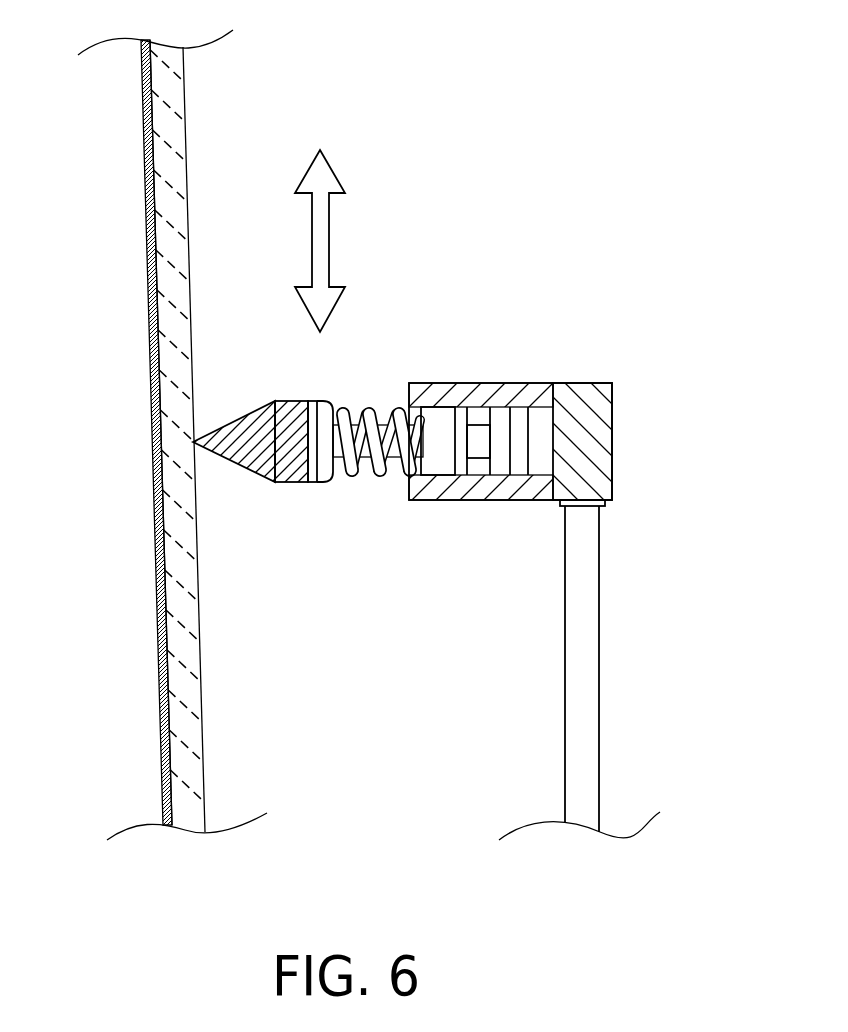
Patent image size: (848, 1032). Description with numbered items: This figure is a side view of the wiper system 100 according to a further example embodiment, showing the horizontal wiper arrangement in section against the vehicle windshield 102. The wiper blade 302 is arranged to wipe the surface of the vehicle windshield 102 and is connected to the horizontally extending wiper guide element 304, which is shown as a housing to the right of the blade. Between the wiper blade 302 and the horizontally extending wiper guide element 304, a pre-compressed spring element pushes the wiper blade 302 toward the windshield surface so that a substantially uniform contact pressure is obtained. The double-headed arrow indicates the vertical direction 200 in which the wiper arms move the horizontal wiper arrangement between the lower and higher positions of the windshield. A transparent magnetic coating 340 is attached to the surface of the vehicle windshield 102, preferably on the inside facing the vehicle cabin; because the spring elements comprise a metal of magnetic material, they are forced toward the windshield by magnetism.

The wiper system 100 is at (455, 484).
The vehicle windshield 102 is at (167, 110).
The vertical direction 200 is at (329, 239).
The wiper blade 302 is at (272, 440).
The horizontally extending wiper guide element 304 is at (577, 435).
The transparent magnetic coating 340 is at (148, 302).